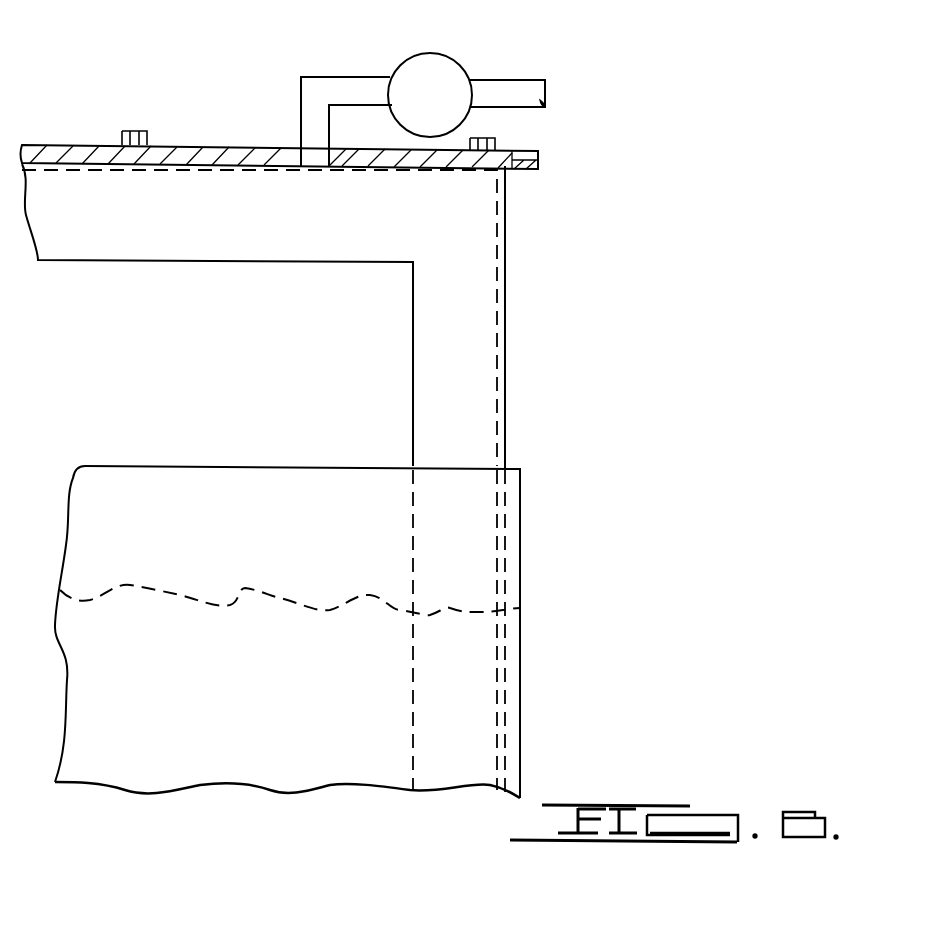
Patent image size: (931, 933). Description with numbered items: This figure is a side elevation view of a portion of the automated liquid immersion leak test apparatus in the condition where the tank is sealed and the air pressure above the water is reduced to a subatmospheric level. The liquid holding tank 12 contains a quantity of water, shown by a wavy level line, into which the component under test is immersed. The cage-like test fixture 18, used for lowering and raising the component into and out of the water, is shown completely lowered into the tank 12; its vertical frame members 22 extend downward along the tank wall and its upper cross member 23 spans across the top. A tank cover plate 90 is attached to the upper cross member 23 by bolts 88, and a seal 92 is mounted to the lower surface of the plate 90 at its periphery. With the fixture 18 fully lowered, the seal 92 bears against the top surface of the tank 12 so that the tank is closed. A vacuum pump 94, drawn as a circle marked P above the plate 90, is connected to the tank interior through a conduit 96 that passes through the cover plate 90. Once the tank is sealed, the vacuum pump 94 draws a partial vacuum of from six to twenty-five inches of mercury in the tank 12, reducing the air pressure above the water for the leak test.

The liquid holding tank 12 is at (521, 642).
The test fixture 18 is at (515, 413).
The vertical frame members 22 is at (484, 298).
The upper cross member 23 is at (206, 247).
The bolts 88 is at (124, 131).
The tank cover plate 90 is at (229, 152).
The seal 92 is at (518, 169).
The vacuum pump 94 is at (452, 72).
The conduit 96 is at (338, 91).